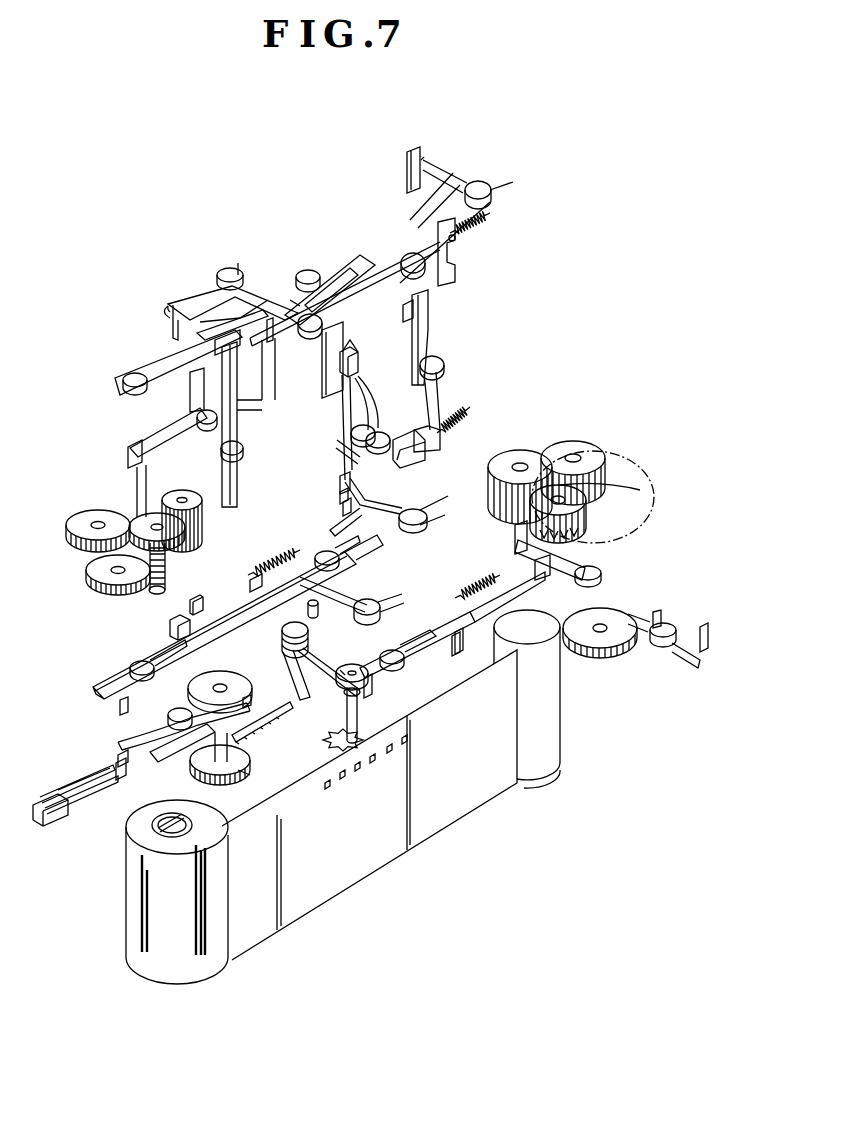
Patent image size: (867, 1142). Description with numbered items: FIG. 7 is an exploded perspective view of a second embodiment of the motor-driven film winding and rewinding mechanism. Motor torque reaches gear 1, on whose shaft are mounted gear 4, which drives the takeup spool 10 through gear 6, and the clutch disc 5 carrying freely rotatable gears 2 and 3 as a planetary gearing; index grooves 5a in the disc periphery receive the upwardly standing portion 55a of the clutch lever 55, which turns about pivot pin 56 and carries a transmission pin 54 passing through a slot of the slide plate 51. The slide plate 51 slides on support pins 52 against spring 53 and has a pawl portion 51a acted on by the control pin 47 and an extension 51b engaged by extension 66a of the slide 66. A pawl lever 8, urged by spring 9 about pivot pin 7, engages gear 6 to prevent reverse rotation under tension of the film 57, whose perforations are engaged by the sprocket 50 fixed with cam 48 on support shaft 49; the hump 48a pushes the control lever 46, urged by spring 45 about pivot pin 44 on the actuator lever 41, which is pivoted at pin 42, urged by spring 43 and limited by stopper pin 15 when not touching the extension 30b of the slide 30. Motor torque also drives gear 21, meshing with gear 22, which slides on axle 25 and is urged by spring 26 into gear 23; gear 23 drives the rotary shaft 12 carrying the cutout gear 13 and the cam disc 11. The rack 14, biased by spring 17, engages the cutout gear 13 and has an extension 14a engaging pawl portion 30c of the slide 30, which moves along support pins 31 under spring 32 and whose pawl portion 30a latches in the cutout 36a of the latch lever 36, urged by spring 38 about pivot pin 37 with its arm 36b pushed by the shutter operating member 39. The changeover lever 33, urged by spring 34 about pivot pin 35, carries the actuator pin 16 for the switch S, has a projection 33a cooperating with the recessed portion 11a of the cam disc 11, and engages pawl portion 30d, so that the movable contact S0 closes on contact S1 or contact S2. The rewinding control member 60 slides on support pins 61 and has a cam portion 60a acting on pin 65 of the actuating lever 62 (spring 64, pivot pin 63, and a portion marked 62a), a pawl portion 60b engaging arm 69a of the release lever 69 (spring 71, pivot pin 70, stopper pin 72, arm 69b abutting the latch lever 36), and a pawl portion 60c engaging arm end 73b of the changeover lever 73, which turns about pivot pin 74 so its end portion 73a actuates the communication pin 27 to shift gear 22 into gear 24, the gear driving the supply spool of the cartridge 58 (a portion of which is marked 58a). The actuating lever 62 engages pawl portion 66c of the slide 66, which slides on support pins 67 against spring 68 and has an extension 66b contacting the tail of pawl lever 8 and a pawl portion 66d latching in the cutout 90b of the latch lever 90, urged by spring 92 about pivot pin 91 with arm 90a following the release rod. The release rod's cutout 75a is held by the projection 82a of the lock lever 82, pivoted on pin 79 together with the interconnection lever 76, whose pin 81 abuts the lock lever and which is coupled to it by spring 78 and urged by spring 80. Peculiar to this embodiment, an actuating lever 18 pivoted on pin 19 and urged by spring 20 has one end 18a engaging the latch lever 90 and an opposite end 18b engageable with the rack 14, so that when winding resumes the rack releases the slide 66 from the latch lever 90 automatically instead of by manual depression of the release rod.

The gear 1 is at (580, 455).
The gear 2 is at (522, 462).
The gear 3 is at (578, 505).
The gear train 4 is at (640, 490).
The disc 5 is at (620, 470).
The teeth 5a is at (570, 538).
The gear 6 is at (602, 620).
The hub 7 is at (665, 624).
The lever 8 is at (688, 664).
The pin 9 is at (656, 612).
The spool 10 is at (540, 650).
The disc 11 is at (220, 680).
The pin 11a is at (247, 696).
The gear 12 is at (250, 760).
The gear 13 is at (245, 775).
The lever 14 is at (424, 455).
The tab 14a is at (190, 606).
The pin 15 is at (308, 612).
The contact piece 16 is at (122, 778).
The spring 17 is at (472, 407).
The lever 18 is at (428, 325).
The plate 18a is at (406, 172).
The end portion 18b is at (441, 438).
The hub 19 is at (445, 365).
The arm 20 is at (440, 378).
The gear 21 is at (183, 497).
The gear 22 is at (158, 510).
The gear 23 is at (80, 515).
The gear 24 is at (88, 575).
The threaded shaft 25 is at (166, 560).
The nut 26 is at (166, 584).
The pin 27 is at (135, 485).
The slide bar 30 is at (210, 620).
The end portion 30a is at (374, 548).
The tab 30b is at (250, 585).
The tab 30c is at (168, 630).
The tab 30d is at (120, 708).
The pin 31 is at (135, 662).
The spring 32 is at (262, 560).
The lever 33 is at (150, 728).
The arm 33a is at (265, 730).
The shaft 34 is at (220, 765).
The pin 35 is at (180, 708).
The lever 36 is at (411, 508).
The arm 36a is at (345, 530).
The arm 36b is at (340, 478).
The pin 37 is at (440, 505).
The arm 38 is at (438, 520).
The tab 39 is at (340, 494).
The lever 41 is at (340, 596).
The pin 42 is at (372, 604).
The arm 43 is at (392, 608).
The pin 44 is at (282, 636).
The arm 45 is at (316, 690).
The arm 46 is at (285, 664).
The collar 47 is at (346, 696).
The hub 48 is at (354, 668).
The tab 48a is at (342, 670).
The shaft 49 is at (358, 715).
The sprocket 50 is at (330, 748).
The lever 51 is at (438, 630).
The tab 51a is at (373, 686).
The tab 51b is at (458, 652).
The pin 52 is at (430, 612).
The spring 53 is at (466, 596).
The block 54 is at (546, 578).
The lever 55 is at (520, 548).
The tab 55a is at (516, 534).
The pin 56 is at (600, 570).
The film 57 is at (352, 868).
The film cartridge 58 is at (173, 970).
The spool end 58a is at (160, 830).
The lever 60 is at (288, 290).
The arm 60a is at (200, 310).
The tab 60b is at (268, 340).
The tab 60c is at (240, 350).
The pin 61 is at (318, 272).
The plate 62 is at (258, 292).
The slot 62a is at (322, 262).
The pin 63 is at (229, 268).
The pin 64 is at (218, 285).
The arm 65 is at (172, 325).
The lever 66 is at (392, 268).
The tab 66a is at (458, 650).
The tab 66b is at (704, 624).
The tab 66c is at (292, 298).
The pin 66d is at (455, 243).
The pin 67 is at (420, 275).
The spring 68 is at (472, 230).
The lever 69 is at (240, 405).
The arm 69a is at (228, 330).
The arm 69b is at (343, 508).
The pin 70 is at (244, 452).
The arm 71 is at (245, 430).
The arm 72 is at (255, 385).
The lever 73 is at (160, 435).
The end portion 73a is at (130, 450).
The post 73b is at (195, 392).
The pin 74 is at (205, 428).
The plate 75a is at (326, 380).
The arm 76 is at (335, 444).
The arm 78 is at (368, 395).
The pin 79 is at (368, 425).
The pin 80 is at (385, 435).
The arm 81 is at (343, 390).
The block 82 is at (359, 360).
The tip 82a is at (352, 352).
The lever 90 is at (440, 172).
The arm 90a is at (434, 165).
The arm 90b is at (430, 225).
The pin 91 is at (480, 186).
The arm 92 is at (512, 182).
The switch S is at (42, 826).
The contact S0 is at (116, 757).
The contact S1 is at (80, 782).
The contact S2 is at (90, 800).